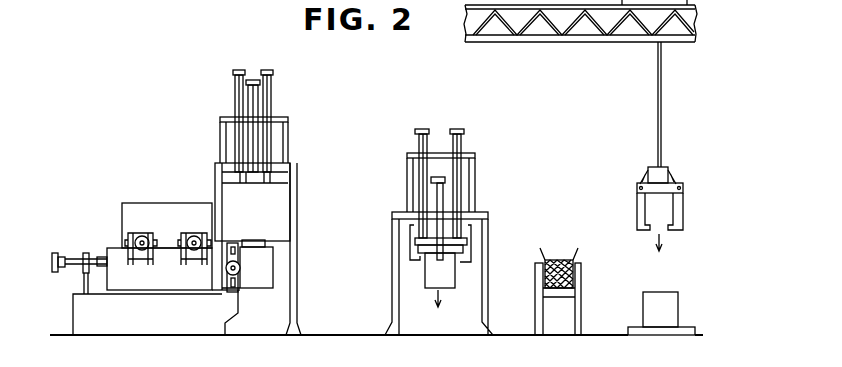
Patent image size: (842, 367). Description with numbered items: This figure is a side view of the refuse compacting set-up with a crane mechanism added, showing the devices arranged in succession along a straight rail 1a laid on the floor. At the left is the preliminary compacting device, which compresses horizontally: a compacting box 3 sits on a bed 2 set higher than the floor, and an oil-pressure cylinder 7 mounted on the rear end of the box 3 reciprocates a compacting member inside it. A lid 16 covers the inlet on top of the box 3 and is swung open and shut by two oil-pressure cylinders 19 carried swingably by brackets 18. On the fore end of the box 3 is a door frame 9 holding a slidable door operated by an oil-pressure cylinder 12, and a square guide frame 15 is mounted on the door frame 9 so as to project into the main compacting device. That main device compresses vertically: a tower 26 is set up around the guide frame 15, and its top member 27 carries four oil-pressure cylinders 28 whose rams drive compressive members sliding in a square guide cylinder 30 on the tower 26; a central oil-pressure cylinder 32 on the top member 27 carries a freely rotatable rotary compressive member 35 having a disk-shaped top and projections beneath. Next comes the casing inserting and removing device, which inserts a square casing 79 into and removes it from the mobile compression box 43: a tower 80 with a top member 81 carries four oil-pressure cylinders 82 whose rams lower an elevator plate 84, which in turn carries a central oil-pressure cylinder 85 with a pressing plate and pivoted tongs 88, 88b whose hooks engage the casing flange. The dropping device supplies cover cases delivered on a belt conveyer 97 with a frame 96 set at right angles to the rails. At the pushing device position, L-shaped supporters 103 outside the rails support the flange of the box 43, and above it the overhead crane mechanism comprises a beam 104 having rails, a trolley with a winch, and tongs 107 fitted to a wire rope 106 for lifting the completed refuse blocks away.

The rail 1a is at (326, 335).
The bed 2 is at (77, 297).
The compacting box 3 is at (125, 278).
The oil-pressure cylinder 7 is at (81, 257).
The door frame 9 is at (237, 293).
The oil-pressure cylinder 12 is at (242, 275).
The guide frame 15 is at (265, 269).
The lid 16 is at (176, 212).
The bracket 18 is at (142, 250).
The oil-pressure cylinder 19 is at (137, 261).
The tower 26 is at (313, 241).
The top member 27 is at (277, 165).
The oil-pressure cylinder 28 is at (235, 93).
The guide cylinder 30 is at (276, 196).
The oil-pressure cylinder 32 is at (250, 80).
The rotary compressive member 35 is at (258, 243).
The compression box 43 is at (667, 300).
The casing 79 is at (450, 309).
The tower 80 is at (393, 236).
The top member 81 is at (405, 212).
The oil-pressure cylinder 82 is at (418, 143).
The elevator plate 84 is at (456, 238).
The oil-pressure cylinder 85 is at (443, 197).
The tong 88 is at (446, 272).
The tong 88b is at (418, 258).
The frame 96 is at (583, 269).
The belt conveyer 97 is at (557, 297).
The supporter 103 is at (662, 335).
The beam 104 is at (545, 42).
The wire rope 106 is at (657, 105).
The tongs 107 is at (637, 205).